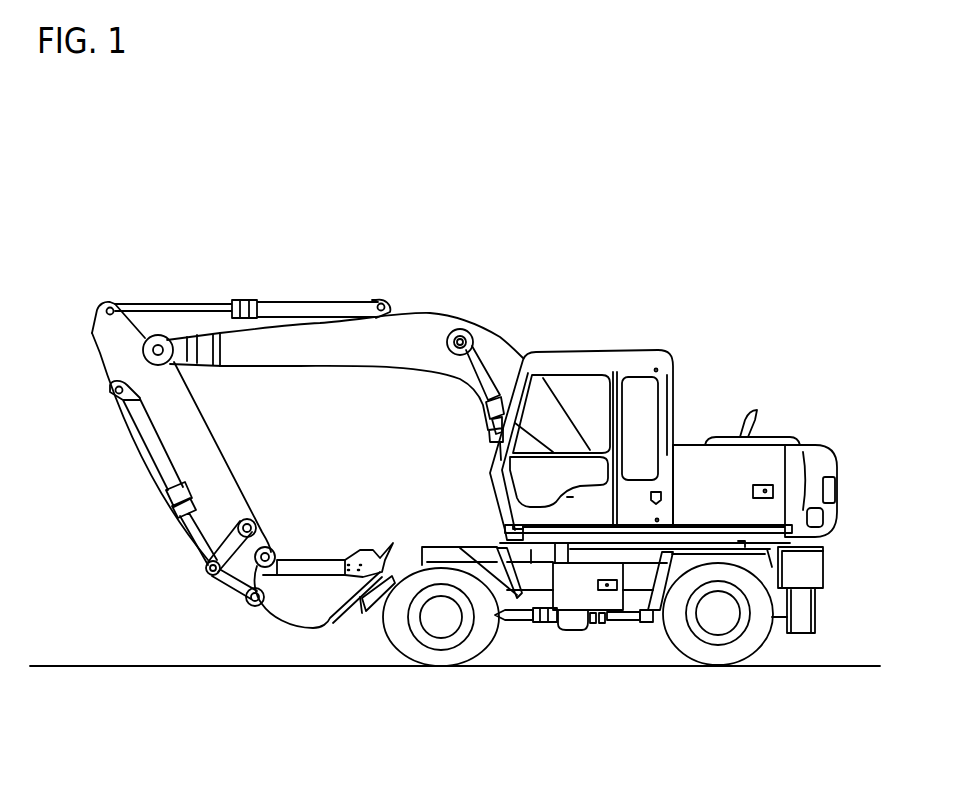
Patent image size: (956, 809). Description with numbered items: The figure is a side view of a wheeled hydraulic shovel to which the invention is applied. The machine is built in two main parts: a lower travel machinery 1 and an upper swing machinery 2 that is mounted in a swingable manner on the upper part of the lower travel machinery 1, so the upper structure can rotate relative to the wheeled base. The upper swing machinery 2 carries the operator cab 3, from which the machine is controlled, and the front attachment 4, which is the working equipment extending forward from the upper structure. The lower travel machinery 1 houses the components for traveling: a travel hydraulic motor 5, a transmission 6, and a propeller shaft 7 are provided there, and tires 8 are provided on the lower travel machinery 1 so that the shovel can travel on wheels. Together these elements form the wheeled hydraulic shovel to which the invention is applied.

The lower travel machinery 1 is at (835, 605).
The upper swing machinery 2 is at (777, 417).
The operator cab 3 is at (594, 357).
The front attachment 4 is at (444, 296).
The travel hydraulic motor 5 is at (533, 614).
The transmission 6 is at (578, 632).
The propeller shaft 7 is at (510, 620).
The tires 8 is at (413, 656).